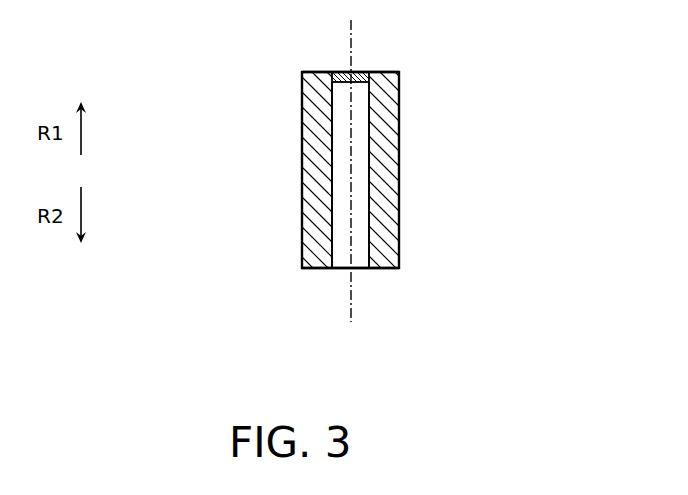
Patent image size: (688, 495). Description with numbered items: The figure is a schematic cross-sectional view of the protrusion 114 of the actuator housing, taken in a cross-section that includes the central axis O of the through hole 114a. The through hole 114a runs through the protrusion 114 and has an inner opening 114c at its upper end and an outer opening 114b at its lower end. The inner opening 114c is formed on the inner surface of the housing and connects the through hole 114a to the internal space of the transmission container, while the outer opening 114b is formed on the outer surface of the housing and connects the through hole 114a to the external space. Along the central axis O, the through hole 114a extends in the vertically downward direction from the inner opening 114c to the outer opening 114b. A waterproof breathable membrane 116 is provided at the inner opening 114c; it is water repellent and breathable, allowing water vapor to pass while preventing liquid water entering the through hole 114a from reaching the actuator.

The central axis O is at (350, 27).
The protrusion 114 is at (400, 195).
The through hole 114a is at (362, 133).
The outer opening 114b is at (358, 269).
The inner opening 114c is at (362, 72).
The waterproof breathable membrane 116 is at (338, 76).